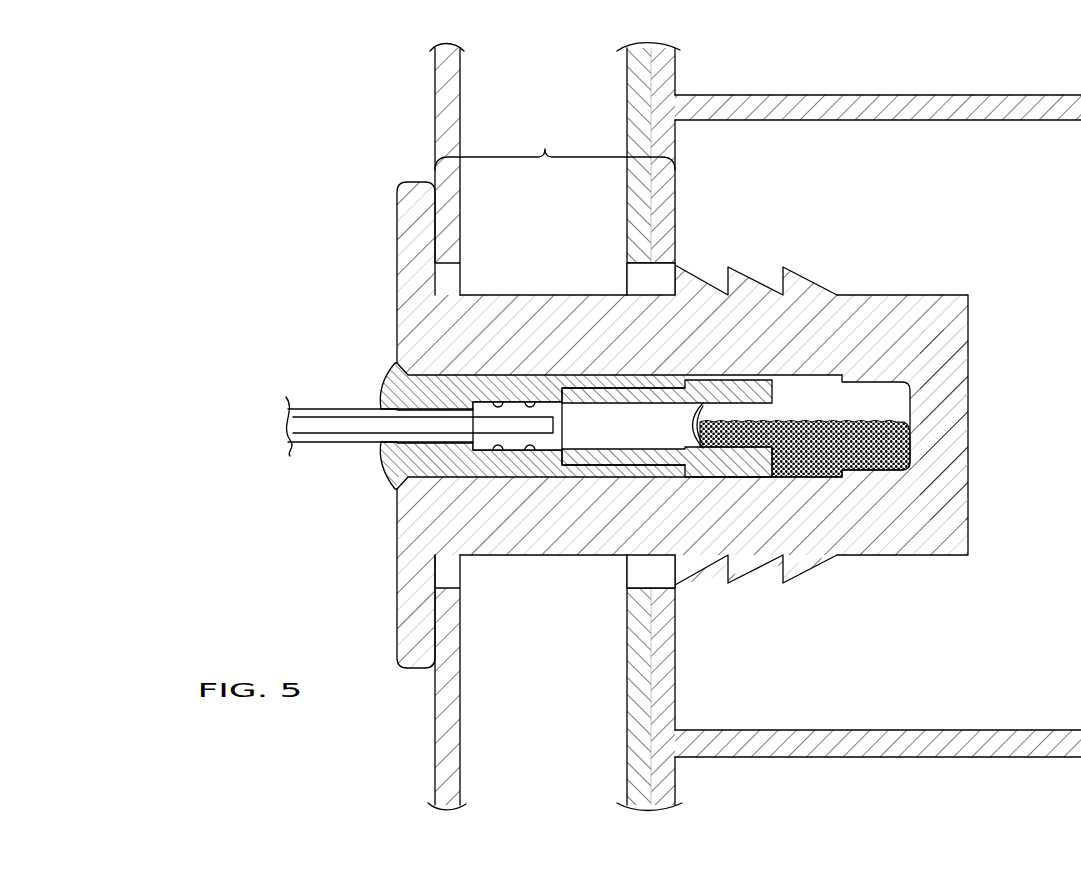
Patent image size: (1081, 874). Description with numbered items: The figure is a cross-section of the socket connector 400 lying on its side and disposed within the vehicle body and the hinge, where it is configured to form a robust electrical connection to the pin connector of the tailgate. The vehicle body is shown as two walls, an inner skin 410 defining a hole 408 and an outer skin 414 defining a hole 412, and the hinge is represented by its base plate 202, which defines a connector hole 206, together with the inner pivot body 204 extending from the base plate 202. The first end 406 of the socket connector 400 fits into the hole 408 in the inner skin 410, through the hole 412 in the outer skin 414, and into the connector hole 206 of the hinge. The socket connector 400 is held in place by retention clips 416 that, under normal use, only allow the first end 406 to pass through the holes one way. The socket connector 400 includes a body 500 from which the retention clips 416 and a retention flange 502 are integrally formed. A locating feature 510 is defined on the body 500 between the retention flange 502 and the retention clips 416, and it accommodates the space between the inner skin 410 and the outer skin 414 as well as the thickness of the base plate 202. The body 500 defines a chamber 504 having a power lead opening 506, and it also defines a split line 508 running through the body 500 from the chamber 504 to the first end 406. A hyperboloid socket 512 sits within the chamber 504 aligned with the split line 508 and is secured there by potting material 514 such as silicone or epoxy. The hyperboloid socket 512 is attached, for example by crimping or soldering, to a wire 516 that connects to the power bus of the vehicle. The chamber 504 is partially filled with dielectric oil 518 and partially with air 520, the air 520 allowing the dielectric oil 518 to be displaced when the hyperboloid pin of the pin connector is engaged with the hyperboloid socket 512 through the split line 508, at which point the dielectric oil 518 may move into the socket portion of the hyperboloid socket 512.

The base plate 202 is at (675, 80).
The inner pivot body 204 is at (990, 95).
The connector hole 206 is at (665, 572).
The socket connector 400 is at (945, 555).
The first end 406 is at (968, 315).
The hole 408 is at (460, 568).
The inner skin 410 is at (460, 78).
The hole 412 is at (627, 568).
The outer skin 414 is at (627, 78).
The retention clips 416 is at (698, 282).
The body 500 is at (397, 548).
The retention flange 502 is at (396, 268).
The chamber 504 is at (527, 386).
The power lead opening 506 is at (395, 390).
The split line 508 is at (910, 425).
The locating feature 510 is at (555, 147).
The hyperboloid socket 512 is at (590, 430).
The potting material 514 is at (390, 467).
The wire 516 is at (307, 426).
The dielectric oil 518 is at (877, 453).
The air 520 is at (877, 393).